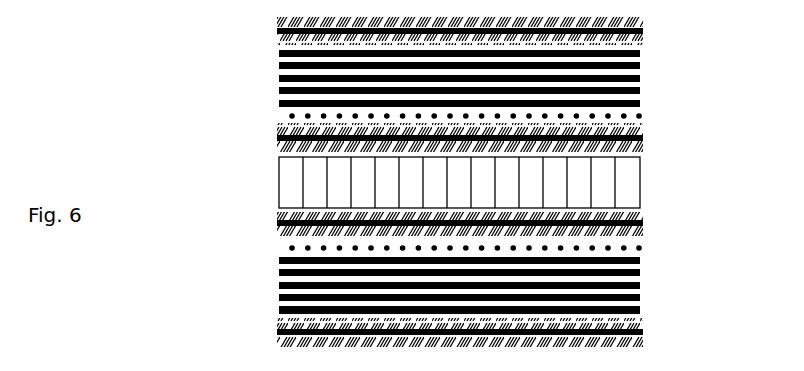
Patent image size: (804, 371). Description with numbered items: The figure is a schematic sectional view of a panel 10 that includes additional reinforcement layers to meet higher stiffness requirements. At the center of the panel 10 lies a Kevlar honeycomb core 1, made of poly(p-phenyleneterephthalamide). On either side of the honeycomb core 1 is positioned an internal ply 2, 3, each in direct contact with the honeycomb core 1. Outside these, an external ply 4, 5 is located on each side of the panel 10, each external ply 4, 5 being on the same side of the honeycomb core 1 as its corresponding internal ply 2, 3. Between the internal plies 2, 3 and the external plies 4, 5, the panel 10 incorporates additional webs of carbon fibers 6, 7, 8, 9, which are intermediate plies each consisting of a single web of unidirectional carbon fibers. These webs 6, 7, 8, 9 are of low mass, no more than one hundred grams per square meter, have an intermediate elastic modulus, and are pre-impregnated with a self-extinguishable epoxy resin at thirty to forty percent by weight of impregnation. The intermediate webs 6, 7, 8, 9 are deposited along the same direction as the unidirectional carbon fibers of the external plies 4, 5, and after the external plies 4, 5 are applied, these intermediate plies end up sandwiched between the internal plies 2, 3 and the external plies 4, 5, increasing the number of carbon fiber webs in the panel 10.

The honeycomb core 1 is at (312, 187).
The internal ply 2 is at (262, 122).
The internal ply 3 is at (262, 215).
The external ply 4 is at (262, 18).
The external ply 5 is at (262, 302).
The additional web of carbon fibers 6 is at (640, 54).
The additional web of carbon fibers 7 is at (640, 67).
The additional web of carbon fibers 8 is at (640, 80).
The additional web of carbon fibers 9 is at (640, 92).
The panel 10 is at (226, 32).